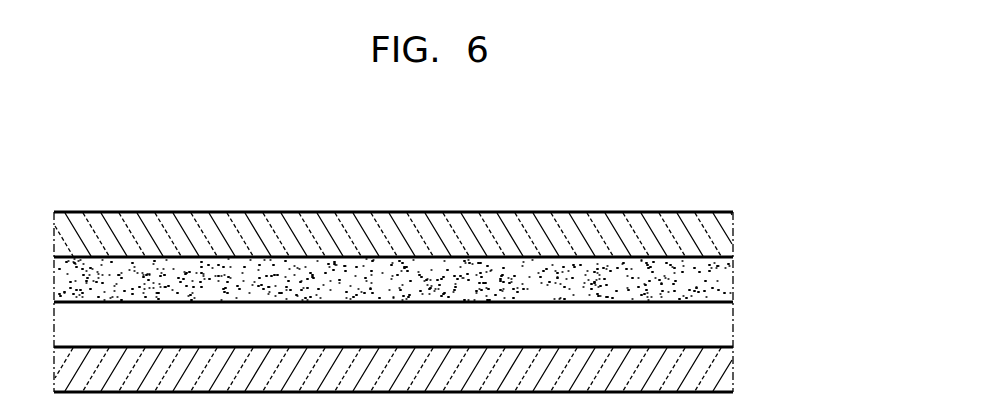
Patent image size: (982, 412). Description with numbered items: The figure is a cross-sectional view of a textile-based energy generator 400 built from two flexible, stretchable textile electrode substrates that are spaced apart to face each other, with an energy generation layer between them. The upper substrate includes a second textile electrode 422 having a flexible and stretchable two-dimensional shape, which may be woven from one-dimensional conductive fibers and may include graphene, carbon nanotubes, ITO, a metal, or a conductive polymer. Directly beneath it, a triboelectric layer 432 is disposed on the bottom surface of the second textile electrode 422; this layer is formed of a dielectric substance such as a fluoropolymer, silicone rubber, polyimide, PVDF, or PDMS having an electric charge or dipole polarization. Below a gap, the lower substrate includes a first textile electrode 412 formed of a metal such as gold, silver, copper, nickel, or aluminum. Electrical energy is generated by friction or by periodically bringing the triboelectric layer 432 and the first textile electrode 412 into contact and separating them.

The textile-based energy generator 400 is at (706, 157).
The second textile electrode 422 is at (717, 230).
The triboelectric layer 432 is at (717, 281).
The first textile electrode 412 is at (723, 375).